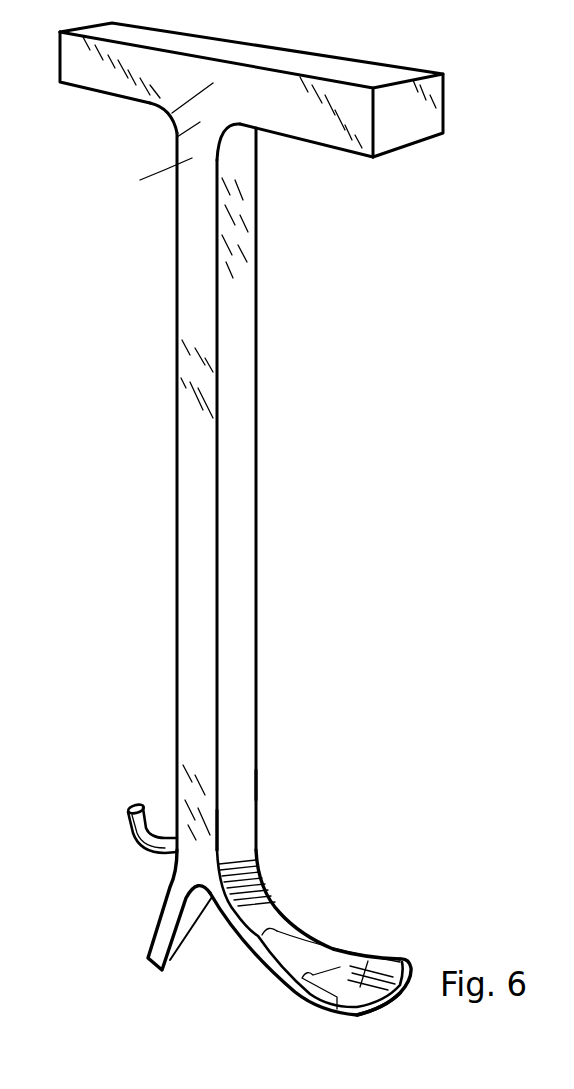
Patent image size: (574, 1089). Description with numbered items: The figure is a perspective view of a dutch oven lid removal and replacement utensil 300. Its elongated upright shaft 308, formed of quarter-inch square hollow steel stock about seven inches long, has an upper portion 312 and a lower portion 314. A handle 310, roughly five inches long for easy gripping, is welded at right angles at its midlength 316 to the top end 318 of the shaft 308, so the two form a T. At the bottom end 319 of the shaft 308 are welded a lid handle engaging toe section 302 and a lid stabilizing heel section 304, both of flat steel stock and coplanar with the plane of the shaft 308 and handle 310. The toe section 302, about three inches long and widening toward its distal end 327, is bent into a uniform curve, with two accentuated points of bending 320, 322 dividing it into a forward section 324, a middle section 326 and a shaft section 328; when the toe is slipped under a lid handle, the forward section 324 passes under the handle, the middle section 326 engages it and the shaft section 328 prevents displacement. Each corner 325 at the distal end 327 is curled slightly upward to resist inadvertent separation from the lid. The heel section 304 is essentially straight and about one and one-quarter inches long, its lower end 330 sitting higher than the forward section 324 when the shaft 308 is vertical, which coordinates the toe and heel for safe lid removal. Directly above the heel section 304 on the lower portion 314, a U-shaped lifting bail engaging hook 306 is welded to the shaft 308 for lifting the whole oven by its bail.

The lid and oven utensil 300 is at (157, 497).
The lid handle engaging toe section 302 is at (335, 931).
The lid stabilizing heel section 304 is at (150, 922).
The lifting bail engaging hook 306 is at (115, 796).
The elongated upright shaft 308 is at (257, 551).
The handle 310 is at (417, 58).
The upper portion 312 is at (140, 180).
The lower portion 314 is at (242, 783).
The midlength 316 is at (172, 113).
The top end 318 is at (177, 137).
The bottom end 319 is at (247, 826).
The point of bending 320 is at (255, 945).
The point of bending 322 is at (302, 985).
The forward section 324 is at (371, 965).
The corner 325 is at (412, 970).
The middle section 326 is at (305, 947).
The distal end 327 is at (390, 1012).
The shaft section 328 is at (270, 915).
The lower end 330 is at (182, 962).